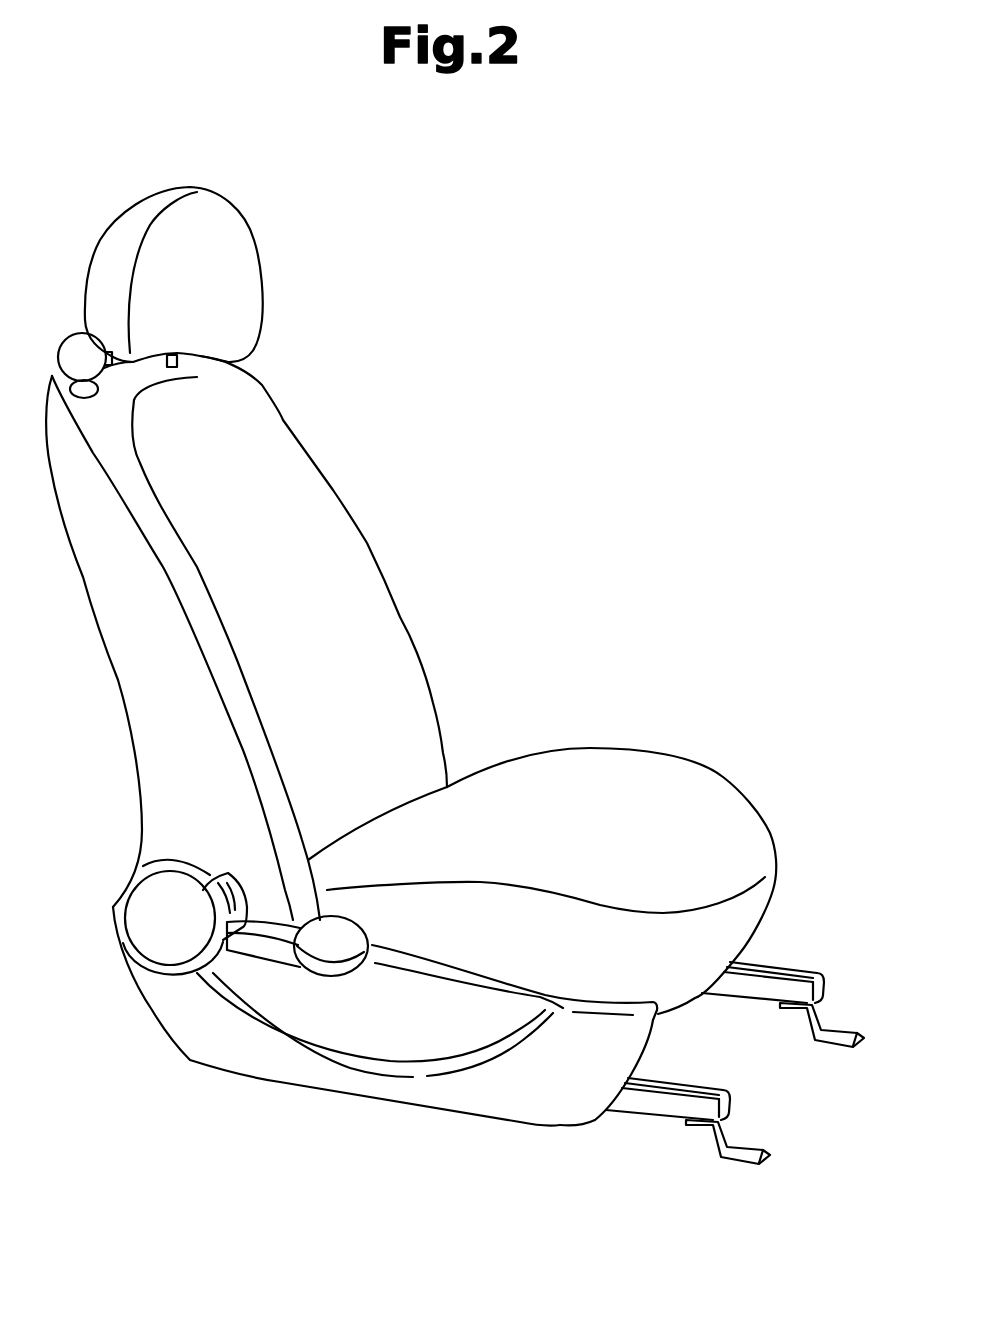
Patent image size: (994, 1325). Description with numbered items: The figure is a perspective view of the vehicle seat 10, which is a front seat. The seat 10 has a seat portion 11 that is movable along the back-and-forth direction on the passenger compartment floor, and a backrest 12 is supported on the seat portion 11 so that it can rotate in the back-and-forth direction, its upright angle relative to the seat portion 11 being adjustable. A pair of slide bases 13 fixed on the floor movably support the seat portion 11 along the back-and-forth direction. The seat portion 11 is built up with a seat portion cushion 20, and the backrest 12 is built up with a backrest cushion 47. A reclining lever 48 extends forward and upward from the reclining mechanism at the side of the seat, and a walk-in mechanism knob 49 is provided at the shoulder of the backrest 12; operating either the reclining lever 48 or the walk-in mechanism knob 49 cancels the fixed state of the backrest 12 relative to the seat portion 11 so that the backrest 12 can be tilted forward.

The vehicle seat 10 is at (568, 320).
The seat portion 11 is at (680, 757).
The backrest 12 is at (280, 422).
The slide base 13 is at (800, 962).
The seat portion cushion 20 is at (763, 825).
The backrest cushion 47 is at (395, 643).
The reclining lever 48 is at (353, 933).
The walk-in mechanism knob 49 is at (73, 348).